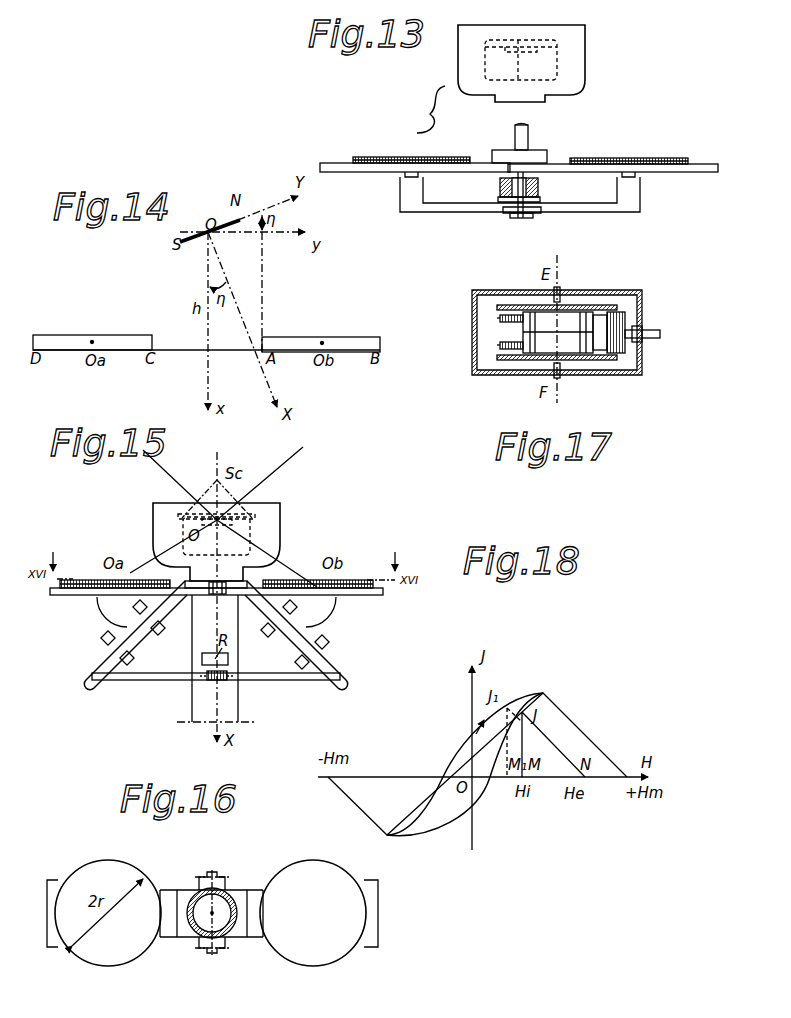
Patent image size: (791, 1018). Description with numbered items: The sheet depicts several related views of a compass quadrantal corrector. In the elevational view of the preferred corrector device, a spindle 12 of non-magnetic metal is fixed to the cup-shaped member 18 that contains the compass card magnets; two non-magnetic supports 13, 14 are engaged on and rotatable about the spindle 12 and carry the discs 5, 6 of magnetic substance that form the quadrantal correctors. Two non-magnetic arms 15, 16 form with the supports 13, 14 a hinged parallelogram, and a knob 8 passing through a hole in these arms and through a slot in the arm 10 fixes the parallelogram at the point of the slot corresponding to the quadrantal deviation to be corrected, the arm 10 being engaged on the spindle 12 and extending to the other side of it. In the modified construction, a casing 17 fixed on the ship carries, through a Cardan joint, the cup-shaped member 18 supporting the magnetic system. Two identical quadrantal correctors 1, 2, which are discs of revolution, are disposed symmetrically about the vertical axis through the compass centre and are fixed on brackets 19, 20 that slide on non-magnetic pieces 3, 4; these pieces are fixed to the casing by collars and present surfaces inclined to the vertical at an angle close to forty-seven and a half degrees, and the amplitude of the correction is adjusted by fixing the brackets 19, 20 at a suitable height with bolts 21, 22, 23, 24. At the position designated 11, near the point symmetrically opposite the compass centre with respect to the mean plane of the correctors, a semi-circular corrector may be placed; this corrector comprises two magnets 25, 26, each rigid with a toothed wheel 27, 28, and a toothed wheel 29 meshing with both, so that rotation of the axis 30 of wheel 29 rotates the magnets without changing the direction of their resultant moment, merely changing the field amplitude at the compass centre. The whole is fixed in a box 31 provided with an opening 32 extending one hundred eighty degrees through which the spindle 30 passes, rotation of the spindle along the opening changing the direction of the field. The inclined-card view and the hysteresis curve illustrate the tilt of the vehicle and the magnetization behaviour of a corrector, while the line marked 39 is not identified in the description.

In FIG. 15, the quadrantal corrector 1 is at (75, 579).
In FIG. 16, the quadrantal corrector 1 is at (123, 952).
In FIG. 15, the quadrantal corrector 2 is at (360, 579).
In FIG. 16, the quadrantal corrector 2 is at (302, 957).
In FIG. 15, the inclined non-magnetic piece 3 is at (92, 677).
In FIG. 16, the inclined non-magnetic piece 3 is at (165, 897).
In FIG. 15, the inclined non-magnetic piece 4 is at (340, 682).
In FIG. 16, the inclined non-magnetic piece 4 is at (255, 898).
In FIG. 13, the magnetic disc 5 is at (428, 157).
In FIG. 13, the magnetic disc 6 is at (658, 158).
In FIG. 13, the knob 8 is at (521, 218).
In FIG. 13, the slotted arm 10 is at (537, 192).
In FIG. 15, the semi-circular corrector position 11 is at (218, 658).
In FIG. 13, the spindle 12 is at (530, 137).
In FIG. 13, the non-magnetic support 13 is at (343, 173).
In FIG. 13, the non-magnetic support 14 is at (710, 174).
In FIG. 13, the non-magnetic arm 15 is at (467, 212).
In FIG. 13, the non-magnetic arm 16 is at (590, 208).
In FIG. 15, the casing 17 is at (282, 520).
In FIG. 13, the cup-shaped member 18 is at (552, 53).
In FIG. 15, the cup-shaped member 18 is at (247, 512).
In FIG. 15, the bracket 19 is at (93, 597).
In FIG. 16, the bracket 19 is at (55, 933).
In FIG. 15, the bracket 20 is at (353, 597).
In FIG. 16, the bracket 20 is at (367, 940).
In FIG. 15, the bolt 21 is at (328, 645).
In FIG. 15, the bolt 22 is at (278, 634).
In FIG. 15, the bolt 23 is at (147, 632).
In FIG. 15, the bolt 24 is at (103, 642).
In FIG. 17, the magnet 25 is at (523, 320).
In FIG. 17, the magnet 26 is at (523, 343).
In FIG. 17, the toothed wheel 27 is at (594, 305).
In FIG. 17, the toothed wheel 28 is at (592, 360).
In FIG. 17, the toothed wheel 29 is at (624, 317).
In FIG. 17, the axis 30 is at (652, 334).
In FIG. 17, the box 31 is at (507, 373).
In FIG. 17, the opening 32 is at (640, 343).
In FIG. 15, the light ray 39 is at (202, 490).